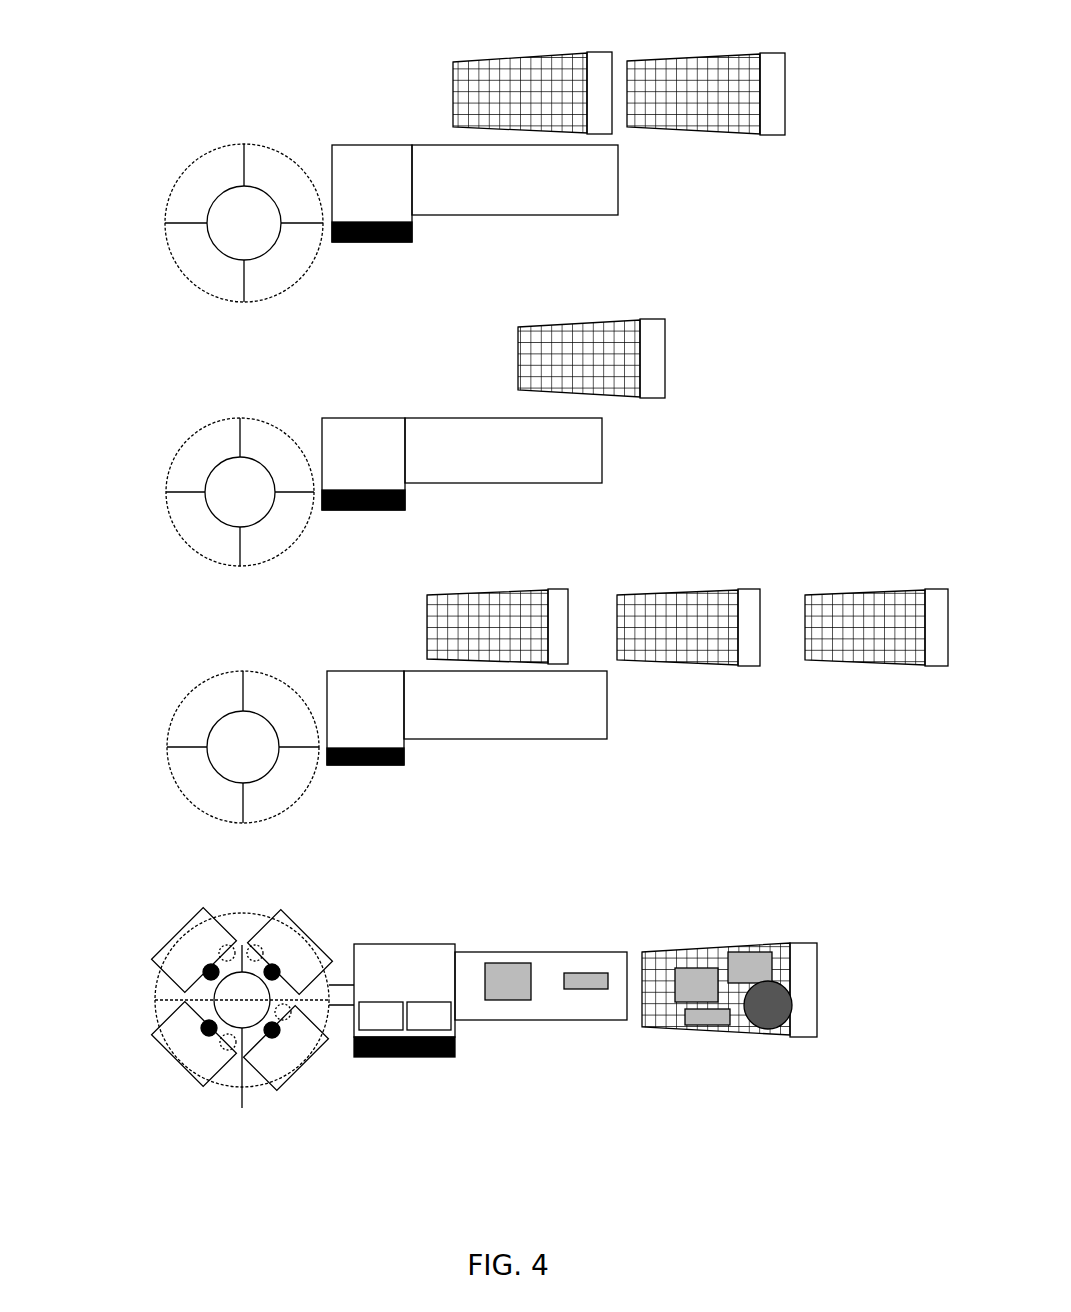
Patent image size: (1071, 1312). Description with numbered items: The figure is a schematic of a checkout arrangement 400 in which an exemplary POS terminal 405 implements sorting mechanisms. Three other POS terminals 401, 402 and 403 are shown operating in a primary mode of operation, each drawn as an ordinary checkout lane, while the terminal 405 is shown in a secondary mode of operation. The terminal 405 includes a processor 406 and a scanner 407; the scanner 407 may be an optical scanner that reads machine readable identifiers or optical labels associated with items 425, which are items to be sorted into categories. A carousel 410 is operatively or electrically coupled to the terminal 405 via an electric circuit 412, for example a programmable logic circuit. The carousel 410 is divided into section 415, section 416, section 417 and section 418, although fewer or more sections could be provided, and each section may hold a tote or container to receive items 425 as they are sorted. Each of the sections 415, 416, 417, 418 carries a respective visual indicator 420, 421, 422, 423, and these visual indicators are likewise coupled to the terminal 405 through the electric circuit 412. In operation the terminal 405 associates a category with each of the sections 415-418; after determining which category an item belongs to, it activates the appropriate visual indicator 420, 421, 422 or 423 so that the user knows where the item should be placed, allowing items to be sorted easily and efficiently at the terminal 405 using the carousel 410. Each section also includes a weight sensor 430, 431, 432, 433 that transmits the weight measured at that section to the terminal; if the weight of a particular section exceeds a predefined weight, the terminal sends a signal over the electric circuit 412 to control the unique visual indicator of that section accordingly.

The retail checkout environment 400 is at (214, 47).
The POS terminal 401 is at (688, 194).
The POS terminal 402 is at (675, 459).
The POS terminal 403 is at (670, 717).
The POS terminal 405 is at (404, 990).
The processor 406 is at (381, 1016).
The scanner 407 is at (429, 1016).
The carousel 410 is at (184, 879).
The electric circuit 412 is at (337, 1005).
The section 415 is at (187, 926).
The section 416 is at (172, 1062).
The section 417 is at (285, 1085).
The section 418 is at (303, 938).
The visual indicator 420 is at (204, 973).
The visual indicator 421 is at (203, 1026).
The visual indicator 422 is at (245, 1085).
The visual indicator 423 is at (272, 964).
The items 425 is at (583, 987).
The weight sensor 430 is at (218, 955).
The weight sensor 431 is at (228, 1052).
The weight sensor 432 is at (318, 1057).
The weight sensor 433 is at (243, 945).